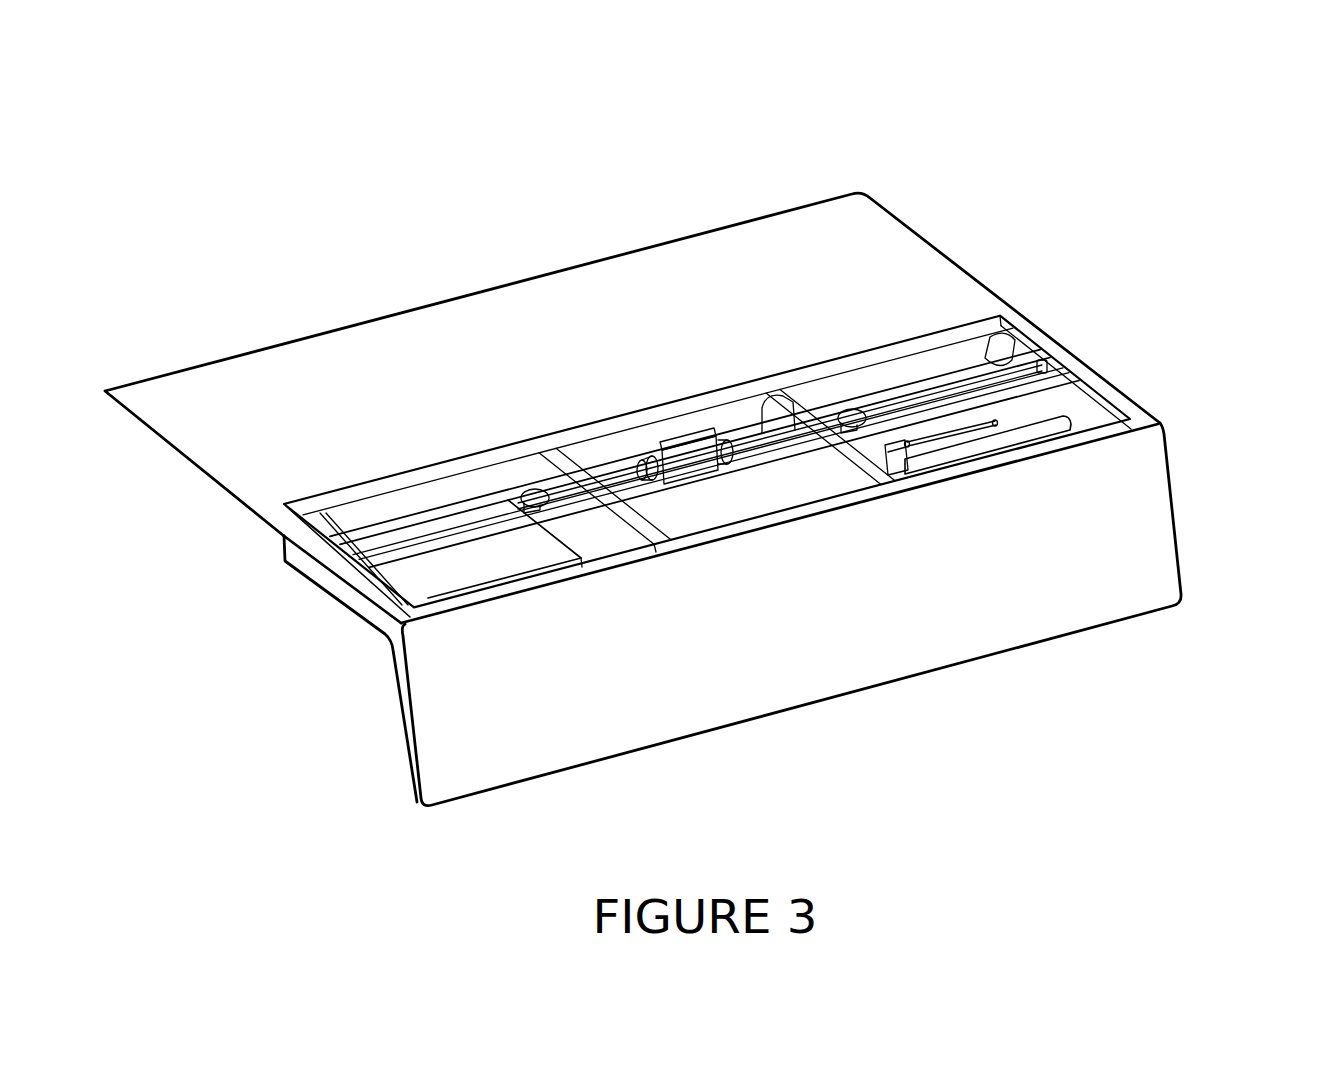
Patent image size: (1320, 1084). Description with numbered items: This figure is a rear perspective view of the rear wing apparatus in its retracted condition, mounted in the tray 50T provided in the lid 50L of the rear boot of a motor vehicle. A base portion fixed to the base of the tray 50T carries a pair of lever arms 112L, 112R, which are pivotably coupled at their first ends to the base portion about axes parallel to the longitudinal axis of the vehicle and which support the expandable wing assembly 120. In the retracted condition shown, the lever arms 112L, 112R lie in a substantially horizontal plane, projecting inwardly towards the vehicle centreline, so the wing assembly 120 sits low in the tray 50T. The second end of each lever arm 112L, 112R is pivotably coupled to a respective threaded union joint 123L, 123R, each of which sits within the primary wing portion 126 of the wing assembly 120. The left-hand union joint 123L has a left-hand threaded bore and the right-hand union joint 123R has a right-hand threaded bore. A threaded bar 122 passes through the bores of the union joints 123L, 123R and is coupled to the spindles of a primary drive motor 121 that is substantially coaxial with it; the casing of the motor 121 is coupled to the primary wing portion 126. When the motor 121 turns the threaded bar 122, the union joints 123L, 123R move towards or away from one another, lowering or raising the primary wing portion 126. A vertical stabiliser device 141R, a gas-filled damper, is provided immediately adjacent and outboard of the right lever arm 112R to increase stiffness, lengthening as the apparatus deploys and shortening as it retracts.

The lid 50L is at (851, 210).
The tray 50T is at (327, 573).
The expandable wing assembly 120 is at (1132, 343).
The primary drive motor 121 is at (688, 452).
The threaded bar 122 is at (617, 473).
The left-hand union joint 123L is at (527, 497).
The right-hand union joint 123R is at (847, 418).
The primary wing portion 126 is at (965, 363).
The left lever arm 112L is at (488, 558).
The right lever arm 112R is at (1032, 417).
The right vertical stabiliser device 141R is at (1090, 423).